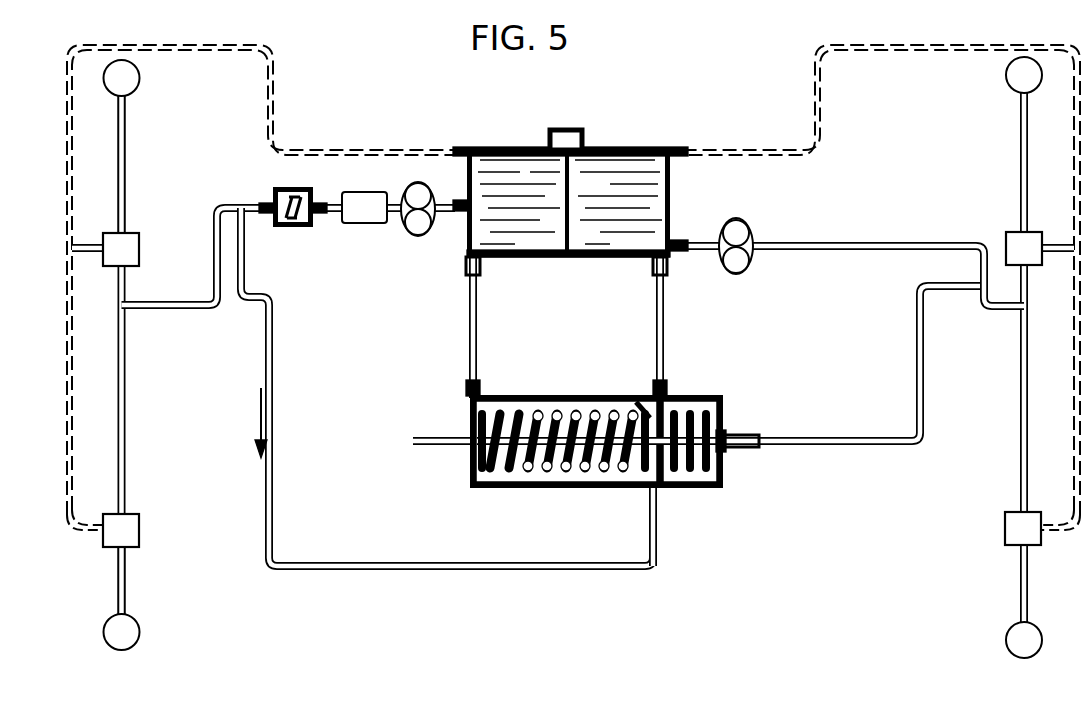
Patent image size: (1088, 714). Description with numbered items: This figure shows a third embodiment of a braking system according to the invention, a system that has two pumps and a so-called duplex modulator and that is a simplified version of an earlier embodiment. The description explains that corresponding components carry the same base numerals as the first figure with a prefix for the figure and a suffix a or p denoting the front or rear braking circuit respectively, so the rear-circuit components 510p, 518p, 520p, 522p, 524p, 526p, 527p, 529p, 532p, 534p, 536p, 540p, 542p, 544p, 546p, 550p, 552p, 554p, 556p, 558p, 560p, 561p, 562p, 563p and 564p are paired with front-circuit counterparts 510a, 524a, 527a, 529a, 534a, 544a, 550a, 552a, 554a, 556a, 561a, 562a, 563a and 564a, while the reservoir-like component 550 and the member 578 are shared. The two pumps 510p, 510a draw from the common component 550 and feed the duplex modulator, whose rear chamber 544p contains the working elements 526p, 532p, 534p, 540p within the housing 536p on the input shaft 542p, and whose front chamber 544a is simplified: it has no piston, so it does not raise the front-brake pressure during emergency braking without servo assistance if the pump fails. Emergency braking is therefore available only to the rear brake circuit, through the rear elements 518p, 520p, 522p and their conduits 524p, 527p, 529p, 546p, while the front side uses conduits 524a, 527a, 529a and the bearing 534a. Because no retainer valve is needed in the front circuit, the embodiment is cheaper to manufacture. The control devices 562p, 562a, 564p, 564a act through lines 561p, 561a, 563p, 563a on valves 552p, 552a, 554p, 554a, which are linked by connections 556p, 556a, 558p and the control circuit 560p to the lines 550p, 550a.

The pump 510p is at (411, 184).
The pump 510a is at (733, 230).
The valve 518p is at (346, 209).
The conduit 520p is at (395, 214).
The filter 522p is at (292, 229).
The return conduit 524p is at (274, 405).
The return conduit 524a is at (916, 362).
The roller elements 526p is at (578, 396).
The drain conduit 527p is at (650, 515).
The output shaft 527a is at (744, 448).
The supply conduit 529p is at (468, 394).
The supply conduit 529a is at (665, 394).
The roller elements 532p is at (590, 489).
The bearing 534p is at (507, 489).
The bearing 534a is at (728, 436).
The housing 536p is at (487, 489).
The bearing 540p is at (620, 489).
The input shaft 542p is at (436, 446).
The housing chamber 544p is at (508, 396).
The housing chamber 544a is at (703, 397).
The conduit 546p is at (155, 310).
The reservoir 550 is at (613, 160).
The control line 550p is at (125, 405).
The control line 550a is at (1020, 390).
The valve 552p is at (135, 240).
The valve 552a is at (1015, 240).
The valve 554p is at (132, 522).
The valve 554a is at (1017, 532).
The control connection 556p is at (95, 246).
The control connection 556a is at (1058, 246).
The control connection 558p is at (90, 532).
The control circuit 560p is at (273, 103).
The control line 561p is at (125, 118).
The control line 561a is at (1020, 106).
The control device 562p is at (140, 86).
The control device 562a is at (1006, 75).
The control line 563p is at (118, 603).
The control line 563a is at (1022, 612).
The control device 564p is at (140, 632).
The control device 564a is at (1012, 640).
The coupling member 578 is at (640, 398).